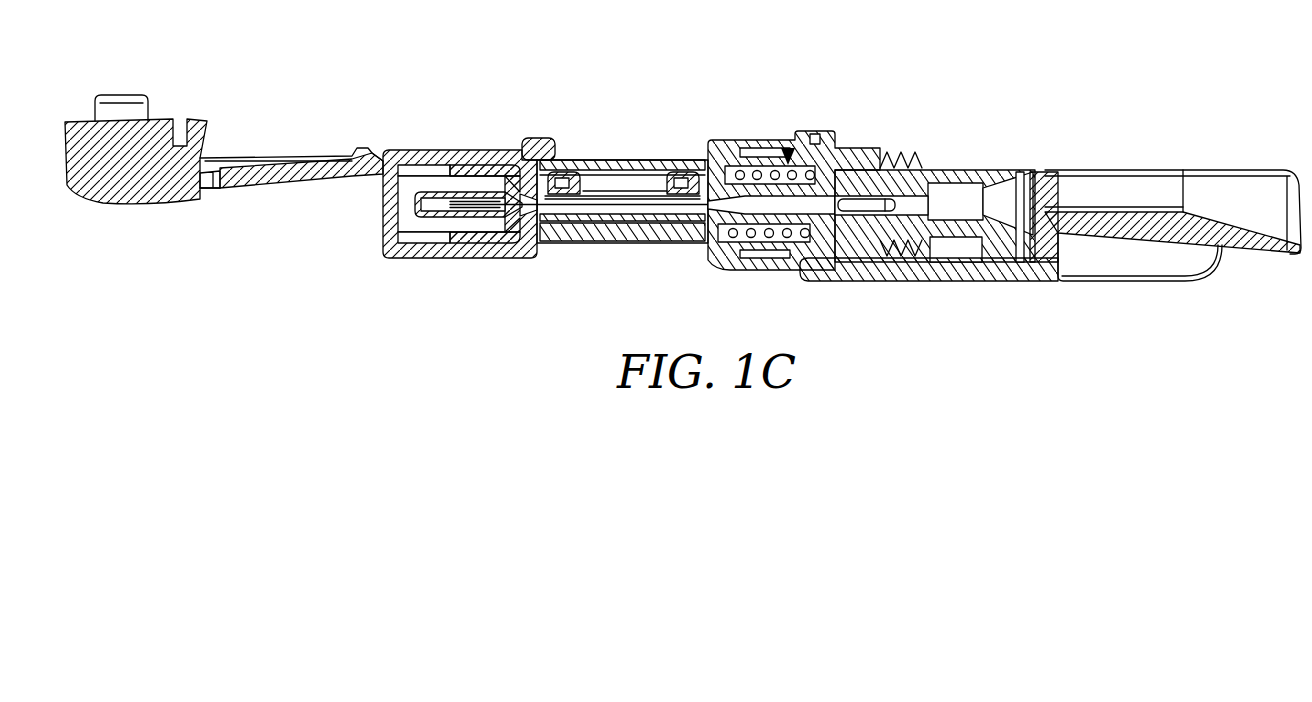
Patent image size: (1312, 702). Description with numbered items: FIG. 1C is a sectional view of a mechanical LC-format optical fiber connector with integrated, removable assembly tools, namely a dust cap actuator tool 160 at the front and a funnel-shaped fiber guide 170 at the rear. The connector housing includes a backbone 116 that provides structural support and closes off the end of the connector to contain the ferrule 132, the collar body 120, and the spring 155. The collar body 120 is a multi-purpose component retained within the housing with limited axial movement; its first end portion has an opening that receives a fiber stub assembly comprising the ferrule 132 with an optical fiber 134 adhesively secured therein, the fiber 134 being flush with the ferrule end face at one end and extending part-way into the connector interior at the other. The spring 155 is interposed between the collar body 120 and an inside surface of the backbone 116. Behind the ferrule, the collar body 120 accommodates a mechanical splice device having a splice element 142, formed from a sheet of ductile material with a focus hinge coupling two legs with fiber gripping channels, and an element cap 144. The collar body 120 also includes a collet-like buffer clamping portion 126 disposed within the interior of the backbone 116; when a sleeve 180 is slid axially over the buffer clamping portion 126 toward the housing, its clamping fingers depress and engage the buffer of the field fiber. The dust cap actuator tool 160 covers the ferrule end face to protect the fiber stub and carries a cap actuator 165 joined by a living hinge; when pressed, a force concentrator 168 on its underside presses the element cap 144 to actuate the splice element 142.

The force concentrator 168 is at (123, 102).
The cap actuator 165 is at (244, 196).
The dust cap actuator tool 160 is at (418, 142).
The ferrule 132 is at (470, 190).
The optical fiber 134 is at (545, 212).
The collar body 120 is at (614, 240).
The splice element 142 is at (633, 190).
The element cap 144 is at (570, 170).
The backbone 116 is at (803, 140).
The spring 155 is at (786, 155).
The sleeve 180 is at (966, 176).
The buffer clamping portion 126 is at (873, 200).
The funnel-shaped fiber guide 170 is at (1000, 283).